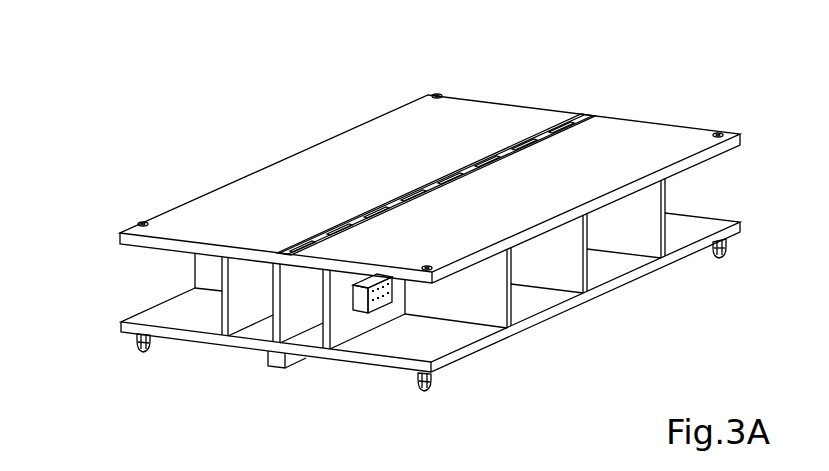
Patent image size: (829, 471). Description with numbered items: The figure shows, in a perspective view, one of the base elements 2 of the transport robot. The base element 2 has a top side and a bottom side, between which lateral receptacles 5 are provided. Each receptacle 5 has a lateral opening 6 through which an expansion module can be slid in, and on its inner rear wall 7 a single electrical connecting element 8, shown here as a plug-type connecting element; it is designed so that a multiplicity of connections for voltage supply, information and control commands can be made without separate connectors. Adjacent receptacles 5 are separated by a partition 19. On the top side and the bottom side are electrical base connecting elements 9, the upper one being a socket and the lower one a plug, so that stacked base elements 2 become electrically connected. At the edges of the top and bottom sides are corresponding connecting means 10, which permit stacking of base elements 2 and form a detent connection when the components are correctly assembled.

The base element 2 is at (276, 92).
The receptacle 5 is at (135, 290).
The lateral opening 6 is at (542, 248).
The inner rear wall 7 is at (337, 333).
The electrical connecting element 8 is at (360, 312).
The electrical base connecting element 9 is at (527, 133).
The connecting means 10 is at (140, 222).
The partition 19 is at (648, 218).